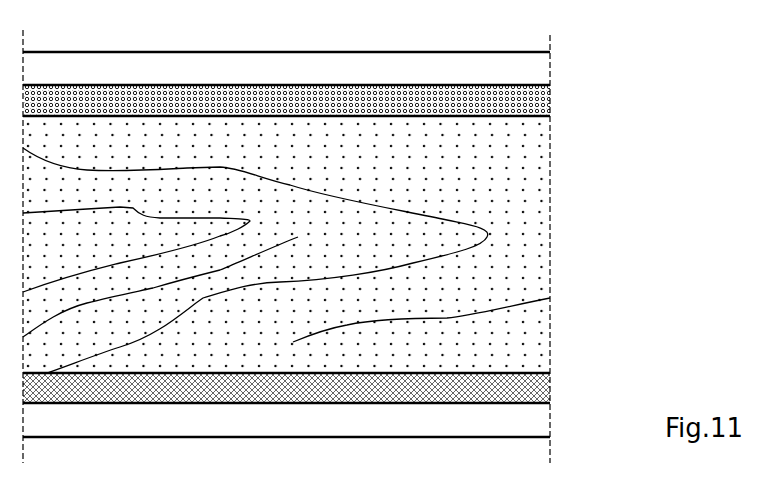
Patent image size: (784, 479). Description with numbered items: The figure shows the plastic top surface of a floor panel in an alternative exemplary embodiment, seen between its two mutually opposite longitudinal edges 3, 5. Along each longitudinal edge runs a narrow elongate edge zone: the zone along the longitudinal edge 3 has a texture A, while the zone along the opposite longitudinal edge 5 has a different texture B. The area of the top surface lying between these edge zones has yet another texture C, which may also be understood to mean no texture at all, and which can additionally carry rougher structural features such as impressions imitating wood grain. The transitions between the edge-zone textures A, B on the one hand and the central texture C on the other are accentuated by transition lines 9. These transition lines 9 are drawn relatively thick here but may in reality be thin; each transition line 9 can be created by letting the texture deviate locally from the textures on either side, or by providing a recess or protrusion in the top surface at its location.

The longitudinal edge 3 is at (483, 85).
The texture of edge zone A is at (547, 97).
The transition line 9 is at (458, 118).
The texture between edge zones C is at (517, 239).
The texture of edge zone B is at (520, 390).
The longitudinal edge 5 is at (493, 403).